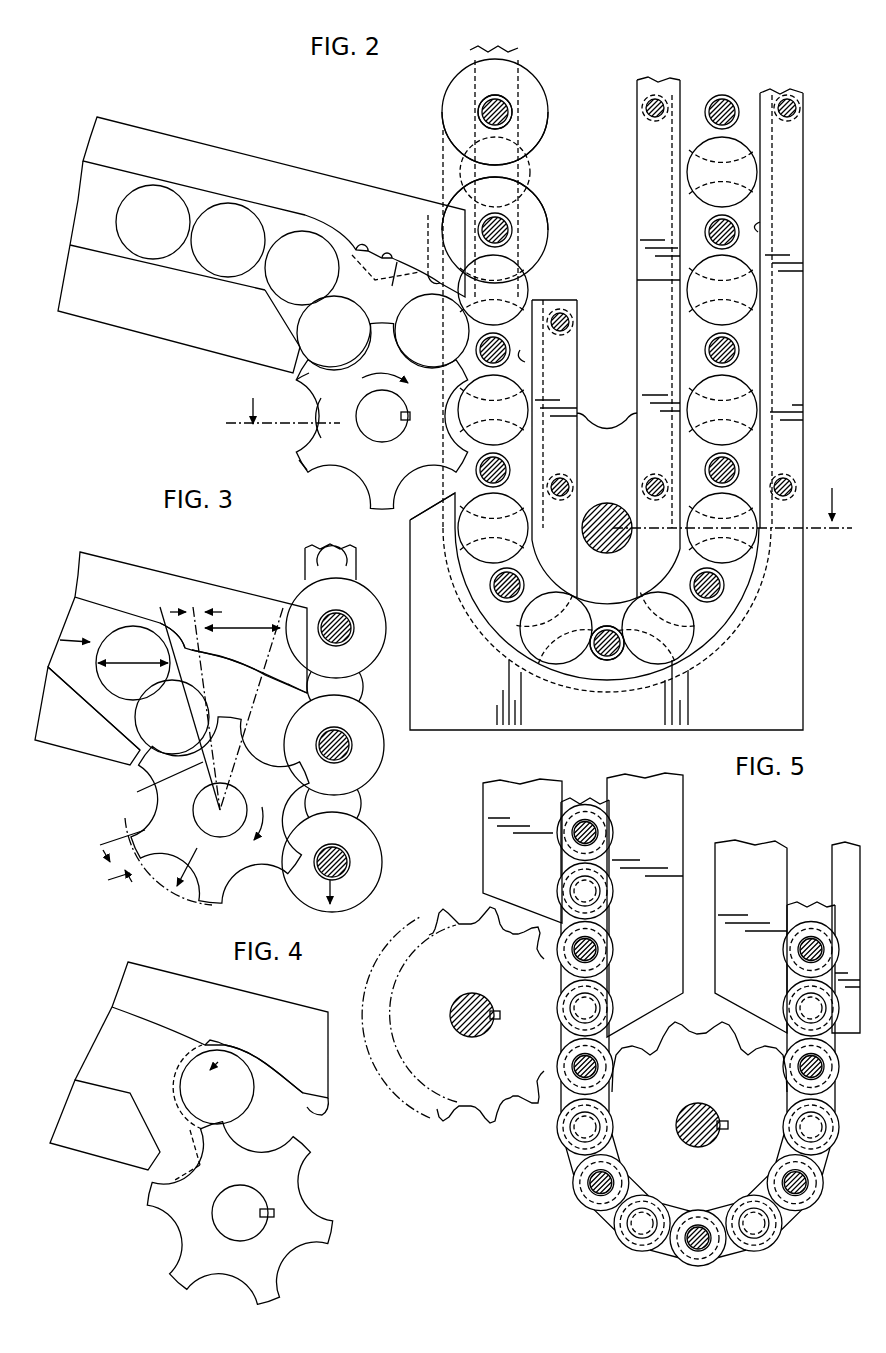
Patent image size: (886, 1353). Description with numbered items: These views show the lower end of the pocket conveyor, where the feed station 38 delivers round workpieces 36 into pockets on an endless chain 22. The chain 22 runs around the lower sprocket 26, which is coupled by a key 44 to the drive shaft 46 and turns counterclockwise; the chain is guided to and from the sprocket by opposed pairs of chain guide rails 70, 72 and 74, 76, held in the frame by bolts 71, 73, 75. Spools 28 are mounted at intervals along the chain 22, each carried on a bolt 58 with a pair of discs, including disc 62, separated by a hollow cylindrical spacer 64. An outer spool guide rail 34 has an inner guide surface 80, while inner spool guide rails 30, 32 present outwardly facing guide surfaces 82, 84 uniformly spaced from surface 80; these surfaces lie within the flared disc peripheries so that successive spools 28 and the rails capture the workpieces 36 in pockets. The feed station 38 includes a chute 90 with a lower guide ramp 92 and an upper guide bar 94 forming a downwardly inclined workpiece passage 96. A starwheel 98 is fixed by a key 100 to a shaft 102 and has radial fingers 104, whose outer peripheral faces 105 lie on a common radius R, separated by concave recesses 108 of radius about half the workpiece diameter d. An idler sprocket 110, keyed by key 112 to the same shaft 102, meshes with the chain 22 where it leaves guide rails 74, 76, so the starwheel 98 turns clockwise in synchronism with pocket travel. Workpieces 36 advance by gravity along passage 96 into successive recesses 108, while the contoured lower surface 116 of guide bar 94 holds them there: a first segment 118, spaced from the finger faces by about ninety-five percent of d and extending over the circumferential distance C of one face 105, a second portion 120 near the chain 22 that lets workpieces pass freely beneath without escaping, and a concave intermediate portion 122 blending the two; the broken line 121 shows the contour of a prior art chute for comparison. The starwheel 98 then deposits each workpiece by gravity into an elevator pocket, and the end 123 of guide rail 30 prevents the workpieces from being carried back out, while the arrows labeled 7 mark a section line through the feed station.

In FIG. 2, the section line 7- 7 is at (539, 461).
In FIG. 2, the endless chain 22 is at (582, 385).
In FIG. 3, the endless chain 22 is at (362, 721).
In FIG. 5, the endless chain 22 is at (617, 835).
In FIG. 2, the lower chain sprocket 26 is at (607, 511).
In FIG. 5, the lower chain sprocket 26 is at (699, 1109).
In FIG. 2, the spool 28 is at (546, 69).
In FIG. 3, the spool 28 is at (388, 767).
In FIG. 2, the inner spool guide rail 30 is at (795, 340).
In FIG. 2, the inner spool guide rail 32 is at (570, 385).
In FIG. 2, the outer spool guide rail 34 is at (637, 318).
In FIG. 2, the workpiece 36 is at (222, 215).
In FIG. 3, the workpiece 36 is at (120, 637).
In FIG. 4, the workpiece 36 is at (180, 1077).
In FIG. 2, the feed station 38 is at (253, 443).
In FIG. 5, the key 44 is at (746, 1108).
In FIG. 2, the drive shaft 46 is at (605, 553).
In FIG. 5, the drive shaft 46 is at (693, 1146).
In FIG. 2, the bolt 58 is at (478, 110).
In FIG. 2, the disc 62 is at (541, 98).
In FIG. 2, the hollow cylindrical spacer 64 is at (502, 108).
In FIG. 5, the chain guide rail 70 is at (842, 853).
In FIG. 2, the bolt 71 is at (787, 98).
In FIG. 5, the chain guide rail 72 is at (773, 886).
In FIG. 2, the bolt 73 is at (646, 112).
In FIG. 5, the chain guide rail 74 is at (668, 812).
In FIG. 2, the bolt 75 is at (563, 316).
In FIG. 5, the chain guide rail 76 is at (483, 830).
In FIG. 2, the inner guide surface 80 is at (760, 228).
In FIG. 2, the guide surface 82 is at (527, 356).
In FIG. 2, the guide surface 84 is at (655, 286).
In FIG. 2, the chute 90 is at (250, 238).
In FIG. 2, the lower guide ramp 92 is at (163, 328).
In FIG. 3, the lower guide ramp 92 is at (86, 738).
In FIG. 4, the lower guide ramp 92 is at (100, 1155).
In FIG. 2, the upper guide bar 94 is at (347, 188).
In FIG. 3, the upper guide bar 94 is at (143, 574).
In FIG. 4, the upper guide bar 94 is at (220, 1030).
In FIG. 2, the workpiece passage 96 is at (82, 215).
In FIG. 3, the workpiece passage 96 is at (77, 663).
In FIG. 4, the workpiece passage 96 is at (130, 1054).
In FIG. 2, the starwheel 98 is at (357, 428).
In FIG. 3, the starwheel 98 is at (186, 833).
In FIG. 4, the starwheel 98 is at (249, 1213).
In FIG. 2, the key 100 is at (406, 396).
In FIG. 2, the shaft 102 is at (383, 444).
In FIG. 3, the shaft 102 is at (203, 815).
In FIG. 4, the shaft 102 is at (243, 1213).
In FIG. 5, the shaft 102 is at (470, 1005).
In FIG. 2, the radial finger 104 is at (311, 380).
In FIG. 3, the radial finger 104 is at (147, 840).
In FIG. 4, the radial finger 104 is at (272, 1302).
In FIG. 2, the outer peripheral face 105 is at (318, 475).
In FIG. 3, the outer peripheral face 105 is at (300, 762).
In FIG. 4, the outer peripheral face 105 is at (300, 1143).
In FIG. 2, the concave recess 108 is at (317, 443).
In FIG. 3, the concave recess 108 is at (247, 867).
In FIG. 4, the concave recess 108 is at (173, 1207).
In FIG. 5, the idler sprocket 110 is at (453, 1042).
In FIG. 5, the key 112 is at (502, 1013).
In FIG. 2, the contoured lower surface 116 is at (396, 284).
In FIG. 3, the contoured lower surface 116 is at (245, 672).
In FIG. 4, the contoured lower surface 116 is at (261, 1058).
In FIG. 2, the first surface portion 118 is at (370, 235).
In FIG. 3, the first surface portion 118 is at (185, 642).
In FIG. 4, the first surface portion 118 is at (222, 1062).
In FIG. 2, the second surface portion 120 is at (430, 274).
In FIG. 3, the second surface portion 120 is at (288, 690).
In FIG. 4, the second surface portion 120 is at (325, 1115).
In FIG. 2, the broken line extension 121 is at (374, 279).
In FIG. 2, the intermediate surface portion 122 is at (388, 254).
In FIG. 3, the intermediate surface portion 122 is at (223, 647).
In FIG. 2, the end of guide 123 is at (416, 510).